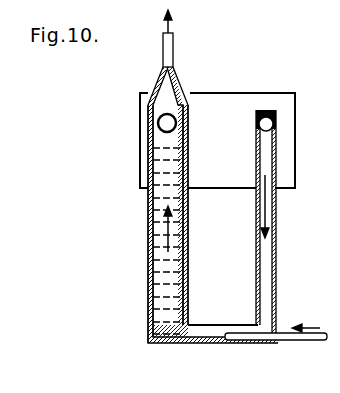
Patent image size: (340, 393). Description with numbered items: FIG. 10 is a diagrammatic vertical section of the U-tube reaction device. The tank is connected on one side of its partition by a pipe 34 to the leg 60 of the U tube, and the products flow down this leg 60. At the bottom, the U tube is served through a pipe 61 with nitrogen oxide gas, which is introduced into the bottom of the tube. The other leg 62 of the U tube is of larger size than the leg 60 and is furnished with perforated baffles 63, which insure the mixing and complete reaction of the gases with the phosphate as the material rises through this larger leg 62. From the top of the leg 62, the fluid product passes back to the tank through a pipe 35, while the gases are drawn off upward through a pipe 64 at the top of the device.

The pipe 64 is at (174, 50).
The pipe 35 is at (158, 122).
The pipe 34 is at (273, 124).
The leg of U tube 60 is at (274, 235).
The other leg of U tube 62 is at (158, 268).
The perforated baffles 63 is at (163, 289).
The pipe 61 is at (288, 341).